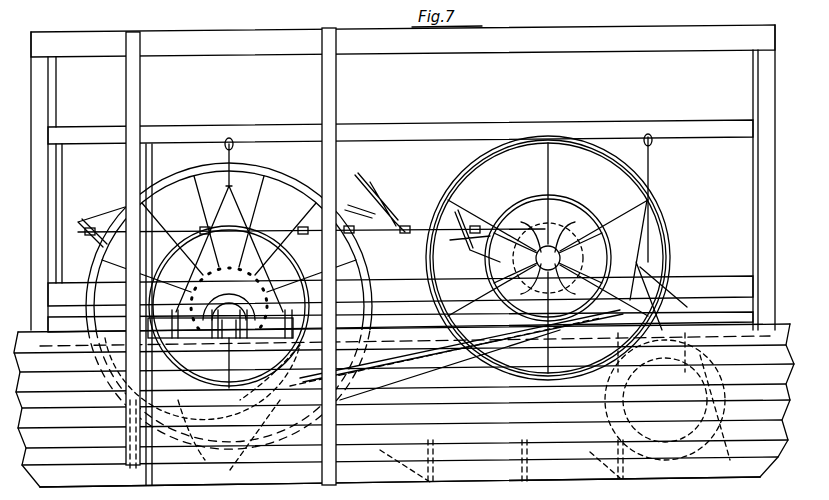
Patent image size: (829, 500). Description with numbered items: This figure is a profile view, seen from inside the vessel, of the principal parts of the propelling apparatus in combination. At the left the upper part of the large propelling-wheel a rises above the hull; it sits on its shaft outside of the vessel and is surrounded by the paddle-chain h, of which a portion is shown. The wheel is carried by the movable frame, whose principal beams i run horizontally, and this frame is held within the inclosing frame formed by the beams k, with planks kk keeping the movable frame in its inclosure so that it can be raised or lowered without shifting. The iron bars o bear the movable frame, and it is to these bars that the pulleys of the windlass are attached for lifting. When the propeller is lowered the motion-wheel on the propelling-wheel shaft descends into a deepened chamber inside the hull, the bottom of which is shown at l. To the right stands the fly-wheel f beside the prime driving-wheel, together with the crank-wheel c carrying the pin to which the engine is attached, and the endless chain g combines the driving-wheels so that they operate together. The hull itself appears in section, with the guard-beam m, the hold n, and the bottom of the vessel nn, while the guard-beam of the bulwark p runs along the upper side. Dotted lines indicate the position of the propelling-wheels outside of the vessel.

The beams of the inclosing frame k is at (404, 232).
The planks kk is at (402, 195).
The principal beams of the movable frame i is at (402, 253).
The bottom of deepened chamber l is at (461, 272).
The propelling-wheel a is at (229, 305).
The iron bars o is at (431, 232).
The endless chain g is at (311, 227).
The paddle-chain h is at (421, 217).
The fly-wheel f is at (548, 258).
The guard-beam of the bulwark p is at (400, 291).
The guard-beam m is at (407, 338).
The hold n is at (404, 405).
The bottom of the vessel nn is at (400, 472).
The crank-wheel c is at (445, 352).